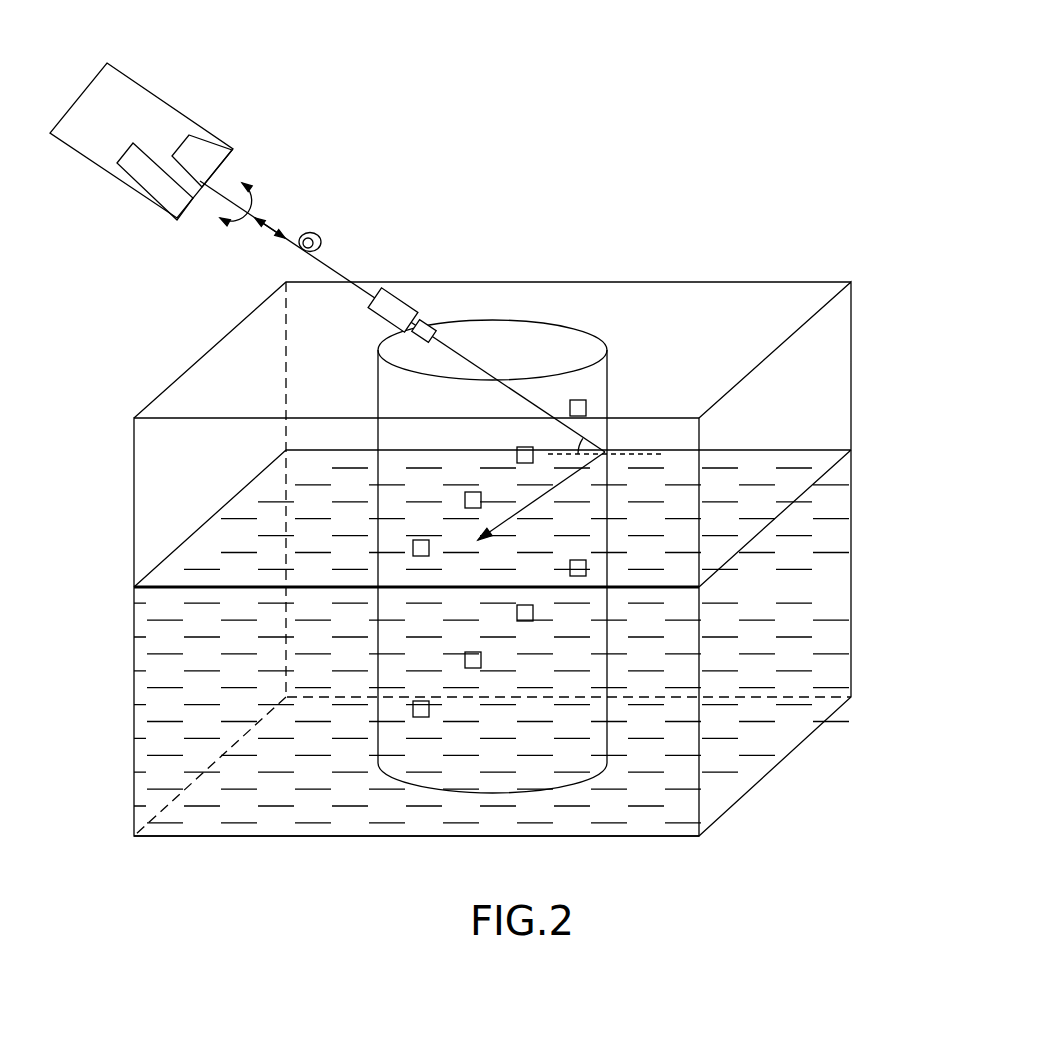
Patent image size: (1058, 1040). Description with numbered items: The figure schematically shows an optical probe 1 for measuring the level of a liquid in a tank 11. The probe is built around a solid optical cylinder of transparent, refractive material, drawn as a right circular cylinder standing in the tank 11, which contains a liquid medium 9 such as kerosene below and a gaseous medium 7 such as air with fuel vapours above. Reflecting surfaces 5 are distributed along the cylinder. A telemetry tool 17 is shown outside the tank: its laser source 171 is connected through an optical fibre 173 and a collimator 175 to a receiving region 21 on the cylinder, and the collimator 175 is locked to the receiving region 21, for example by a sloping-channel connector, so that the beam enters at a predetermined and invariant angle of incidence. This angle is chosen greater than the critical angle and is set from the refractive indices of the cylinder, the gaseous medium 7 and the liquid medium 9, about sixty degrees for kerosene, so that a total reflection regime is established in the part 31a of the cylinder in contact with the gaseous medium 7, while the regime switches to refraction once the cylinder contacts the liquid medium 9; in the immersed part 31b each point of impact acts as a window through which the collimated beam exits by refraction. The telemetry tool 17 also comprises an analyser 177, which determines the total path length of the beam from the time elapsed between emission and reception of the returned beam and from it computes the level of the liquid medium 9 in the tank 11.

The optical probe 1 is at (397, 803).
The reflecting surfaces 5 is at (587, 408).
The gaseous medium 7 is at (830, 340).
The liquid medium 9 is at (813, 584).
The tank 11 is at (853, 390).
The telemetry tool 17 is at (316, 63).
The receiving region 21 is at (433, 323).
The part of the optical cylinder in contact with the gaseous medium 31a is at (607, 432).
The part of the optical cylinder immersed in the liquid 31b is at (607, 660).
The laser source 171 is at (200, 152).
The optical fibre 173 is at (333, 266).
The collimator 175 is at (395, 292).
The analyser 177 is at (157, 177).